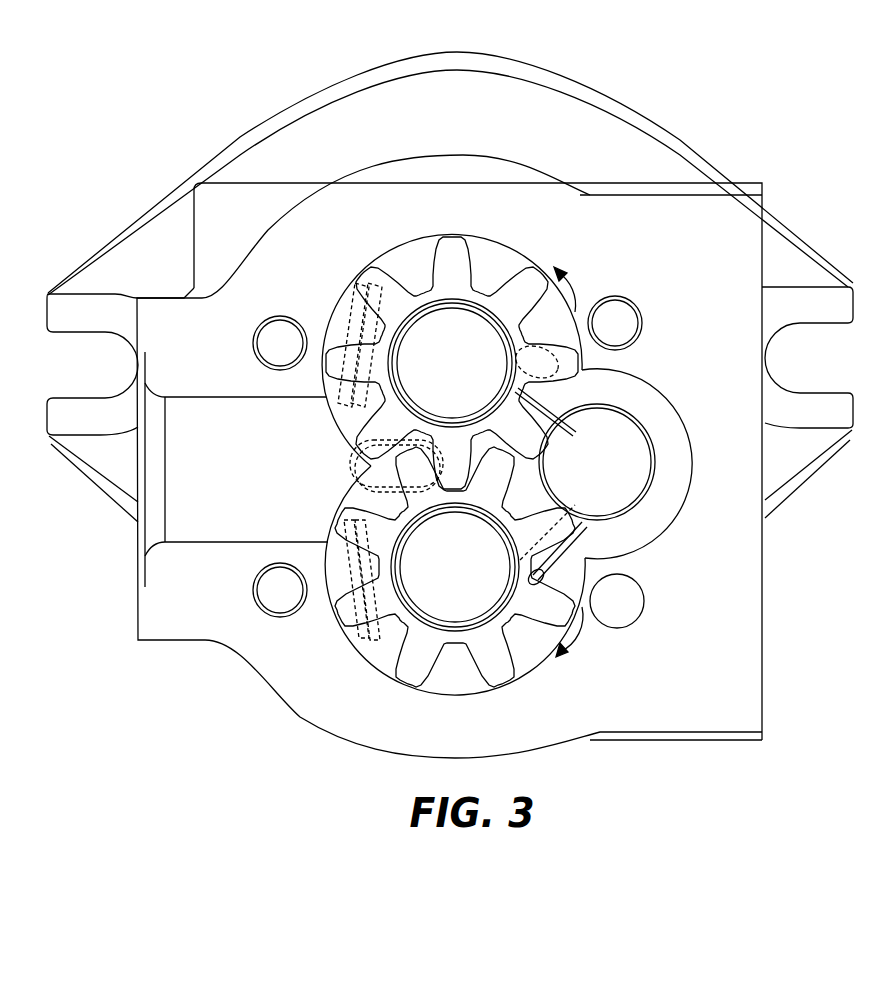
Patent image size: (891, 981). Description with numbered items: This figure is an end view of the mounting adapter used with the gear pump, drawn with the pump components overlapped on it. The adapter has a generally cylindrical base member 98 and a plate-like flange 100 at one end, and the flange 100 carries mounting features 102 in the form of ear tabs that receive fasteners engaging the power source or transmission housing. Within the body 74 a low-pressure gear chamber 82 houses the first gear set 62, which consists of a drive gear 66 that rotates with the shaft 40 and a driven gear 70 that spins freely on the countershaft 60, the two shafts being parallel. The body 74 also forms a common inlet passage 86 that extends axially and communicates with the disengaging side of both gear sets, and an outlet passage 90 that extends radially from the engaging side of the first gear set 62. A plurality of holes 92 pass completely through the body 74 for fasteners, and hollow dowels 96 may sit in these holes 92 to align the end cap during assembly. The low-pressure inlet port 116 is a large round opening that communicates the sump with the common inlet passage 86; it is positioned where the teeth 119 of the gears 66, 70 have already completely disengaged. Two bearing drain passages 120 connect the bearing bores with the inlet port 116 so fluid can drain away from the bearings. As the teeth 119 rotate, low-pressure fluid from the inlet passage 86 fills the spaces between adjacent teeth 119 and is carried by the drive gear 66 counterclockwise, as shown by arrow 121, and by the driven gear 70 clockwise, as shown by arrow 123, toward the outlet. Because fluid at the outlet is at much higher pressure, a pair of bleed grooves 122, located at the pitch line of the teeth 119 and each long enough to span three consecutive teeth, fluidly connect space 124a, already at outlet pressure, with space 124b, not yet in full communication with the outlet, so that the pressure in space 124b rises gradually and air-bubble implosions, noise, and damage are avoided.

The shaft 40 is at (442, 382).
The countershaft 60 is at (445, 578).
The first gear set 62 is at (498, 239).
The drive gear 66 is at (439, 278).
The driven gear 70 is at (475, 497).
The body 74 is at (714, 700).
The low-pressure gear chamber 82 is at (410, 248).
The common inlet passage 86 is at (650, 413).
The outlet passage 90 is at (205, 478).
The holes 92 is at (270, 353).
The hollow dowels 96 is at (644, 326).
The base member 98 is at (520, 167).
The flange 100 is at (605, 128).
The mounting features 102 is at (84, 398).
The low-pressure inlet port 116 is at (582, 472).
The teeth 119 is at (364, 268).
The bearing drain passages 120 is at (556, 397).
The arrow 121 is at (582, 298).
The bleed grooves 122 is at (343, 287).
The arrow 123 is at (568, 648).
The space 124a is at (305, 400).
The space 124b is at (397, 335).